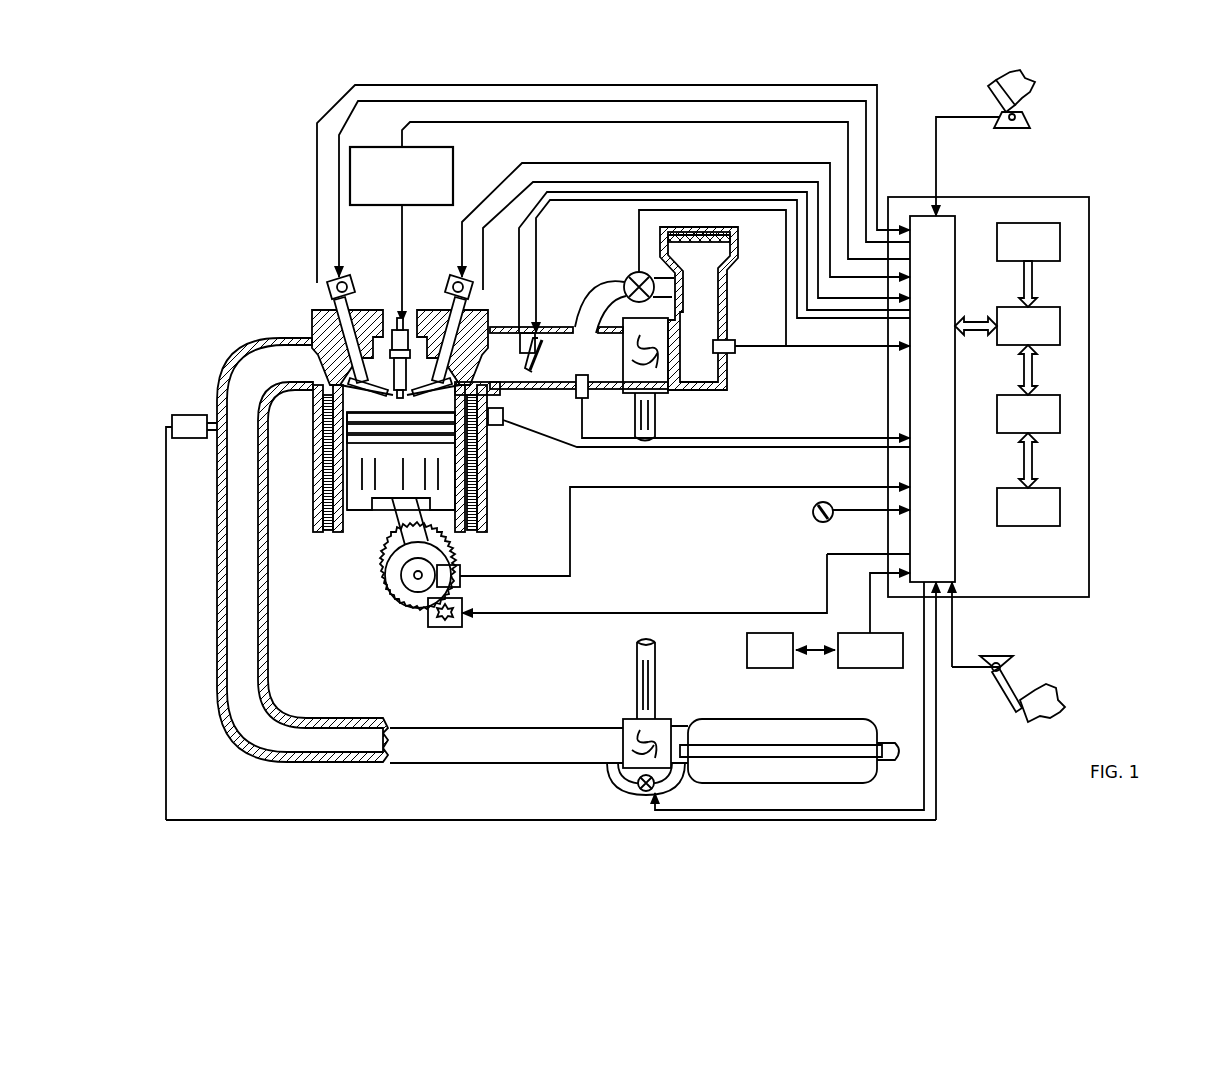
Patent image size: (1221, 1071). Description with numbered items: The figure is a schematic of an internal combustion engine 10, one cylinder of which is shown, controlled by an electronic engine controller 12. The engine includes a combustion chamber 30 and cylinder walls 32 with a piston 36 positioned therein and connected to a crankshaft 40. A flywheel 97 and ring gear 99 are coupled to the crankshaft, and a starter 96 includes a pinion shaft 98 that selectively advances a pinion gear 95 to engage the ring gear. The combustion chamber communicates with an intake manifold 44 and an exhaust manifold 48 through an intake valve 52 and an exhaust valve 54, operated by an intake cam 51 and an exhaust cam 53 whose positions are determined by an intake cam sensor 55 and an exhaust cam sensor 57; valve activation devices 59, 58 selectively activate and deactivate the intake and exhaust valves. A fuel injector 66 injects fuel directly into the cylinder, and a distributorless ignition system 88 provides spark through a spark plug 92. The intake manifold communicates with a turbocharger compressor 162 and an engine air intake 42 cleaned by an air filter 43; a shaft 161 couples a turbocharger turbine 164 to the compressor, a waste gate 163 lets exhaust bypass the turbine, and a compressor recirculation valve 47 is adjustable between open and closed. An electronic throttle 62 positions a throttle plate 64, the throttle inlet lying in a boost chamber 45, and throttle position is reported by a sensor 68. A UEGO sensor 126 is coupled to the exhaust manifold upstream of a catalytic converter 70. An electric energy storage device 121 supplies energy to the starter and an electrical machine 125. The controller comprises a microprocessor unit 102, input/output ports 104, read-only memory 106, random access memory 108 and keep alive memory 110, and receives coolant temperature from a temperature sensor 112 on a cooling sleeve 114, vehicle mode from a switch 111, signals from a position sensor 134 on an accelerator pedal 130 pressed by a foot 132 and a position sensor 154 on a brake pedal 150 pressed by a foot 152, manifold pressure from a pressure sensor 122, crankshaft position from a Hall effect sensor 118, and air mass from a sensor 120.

The internal combustion engine 10 is at (255, 264).
The electronic engine controller 12 is at (1089, 197).
The combustion chamber 30 is at (335, 470).
The cylinder walls 32 is at (348, 520).
The piston 36 is at (385, 487).
The crankshaft 40 is at (408, 600).
The engine air intake 42 is at (590, 240).
The air filter 43 is at (710, 242).
The intake manifold 44 is at (510, 366).
The boost chamber 45 is at (600, 366).
The compressor recirculation valve 47 is at (630, 270).
The exhaust manifold 48 is at (294, 376).
The intake cam 51 is at (462, 275).
The intake valve 52 is at (432, 362).
The exhaust cam 53 is at (339, 275).
The exhaust valve 54 is at (322, 352).
The intake cam sensor 55 is at (470, 290).
The exhaust cam sensor 57 is at (330, 290).
The valve activation device 58 is at (348, 288).
The valve activation device 59 is at (453, 290).
The electronic throttle 62 is at (542, 345).
The throttle plate 64 is at (531, 371).
The fuel injector 66 is at (503, 418).
The throttle position sensor 68 is at (528, 340).
The catalytic converter 70 is at (718, 720).
The distributorless ignition system 88 is at (360, 147).
The spark plug 92 is at (402, 322).
The pinion gear 95 is at (447, 622).
The starter 96 is at (462, 620).
The flywheel 97 is at (398, 572).
The pinion shaft 98 is at (440, 615).
The ring gear 99 is at (415, 608).
The microprocessor unit 102 is at (1060, 328).
The input/output ports 104 is at (955, 222).
The read-only memory 106 is at (1060, 240).
The random access memory 108 is at (1060, 415).
The keep alive memory 110 is at (1060, 508).
The vehicle mode switch 111 is at (814, 518).
The temperature sensor 112 is at (503, 425).
The cooling sleeve 114 is at (470, 490).
The Hall effect sensor 118 is at (460, 567).
The air mass sensor 120 is at (735, 340).
The electric energy storage device 121 is at (874, 620).
The pressure sensor 122 is at (576, 392).
The electrical machine 125 is at (791, 650).
The UEGO sensor 126 is at (172, 420).
The accelerator pedal 130 is at (992, 96).
The foot 132 is at (1032, 84).
The position sensor 134 is at (1020, 120).
The brake pedal 150 is at (1014, 710).
The foot 152 is at (1048, 690).
The position sensor 154 is at (982, 662).
The shaft 161 is at (655, 693).
The turbocharger compressor 162 is at (655, 382).
The waste gate 163 is at (636, 804).
The turbocharger turbine 164 is at (623, 722).